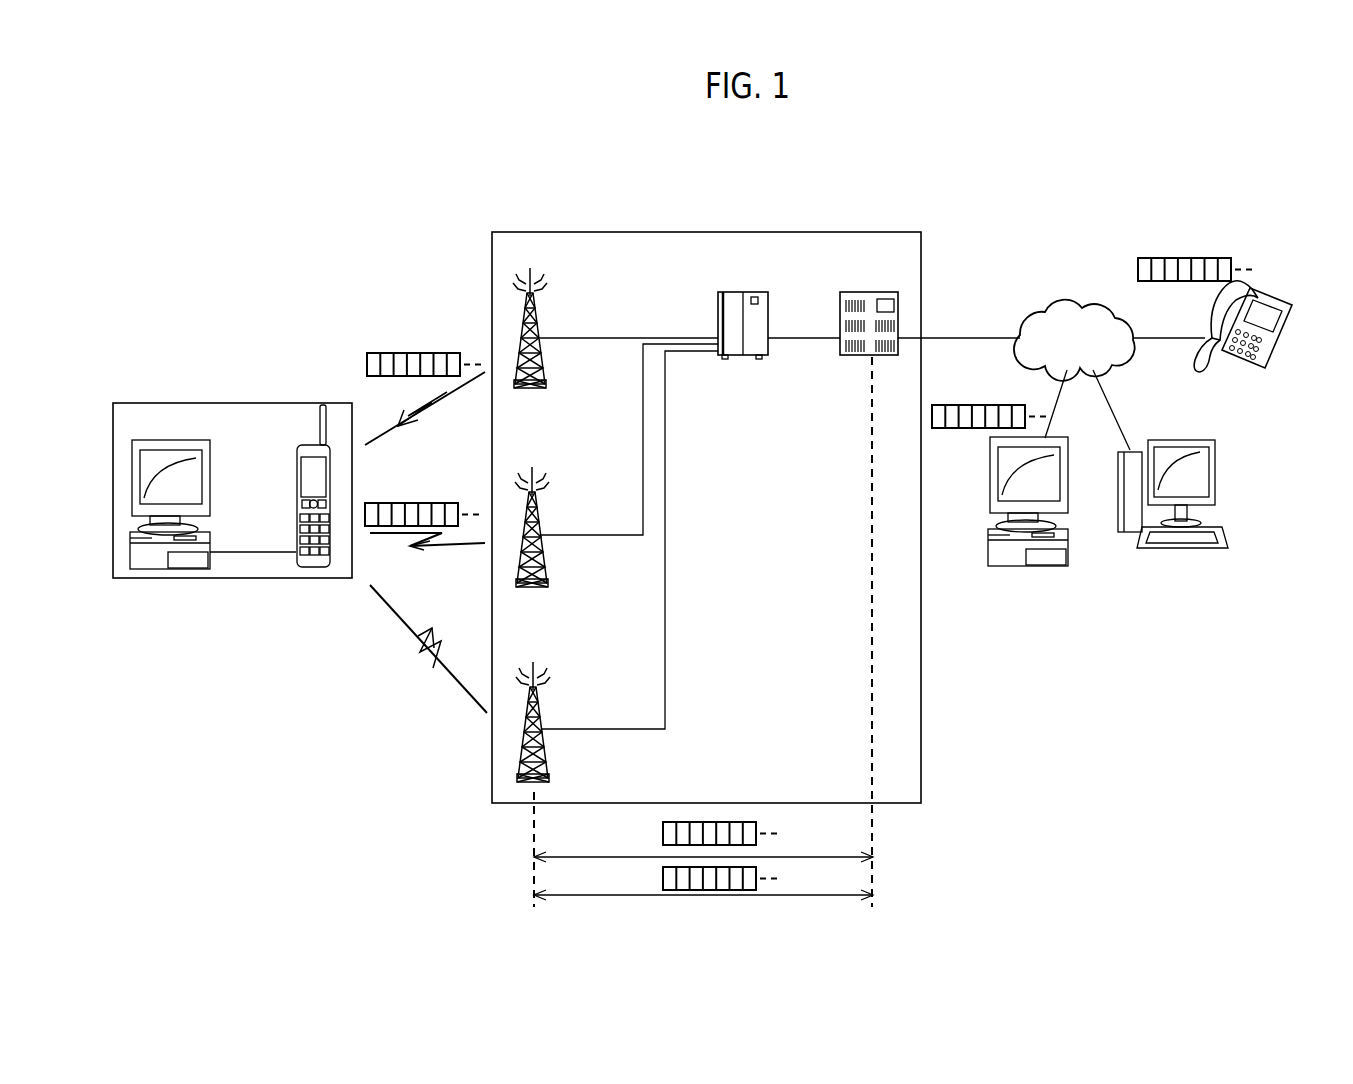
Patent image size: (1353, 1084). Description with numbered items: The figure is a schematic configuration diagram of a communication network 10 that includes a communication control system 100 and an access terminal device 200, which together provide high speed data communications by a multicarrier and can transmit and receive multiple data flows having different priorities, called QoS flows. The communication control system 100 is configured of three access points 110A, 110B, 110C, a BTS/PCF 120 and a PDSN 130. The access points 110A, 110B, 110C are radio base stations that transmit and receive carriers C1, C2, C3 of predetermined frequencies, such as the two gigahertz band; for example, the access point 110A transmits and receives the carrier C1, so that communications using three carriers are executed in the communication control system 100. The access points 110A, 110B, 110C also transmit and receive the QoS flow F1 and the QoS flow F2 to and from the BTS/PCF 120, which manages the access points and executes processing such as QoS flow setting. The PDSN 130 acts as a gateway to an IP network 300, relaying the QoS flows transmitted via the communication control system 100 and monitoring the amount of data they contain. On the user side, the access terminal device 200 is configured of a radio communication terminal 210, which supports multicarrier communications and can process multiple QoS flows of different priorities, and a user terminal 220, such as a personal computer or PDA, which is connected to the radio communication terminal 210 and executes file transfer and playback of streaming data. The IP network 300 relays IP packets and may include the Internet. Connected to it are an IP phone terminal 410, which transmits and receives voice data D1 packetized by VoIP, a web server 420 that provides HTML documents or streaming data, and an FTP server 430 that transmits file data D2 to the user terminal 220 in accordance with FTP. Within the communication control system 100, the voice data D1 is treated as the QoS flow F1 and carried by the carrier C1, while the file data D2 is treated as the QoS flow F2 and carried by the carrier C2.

The communication network 10 is at (1066, 160).
The communication control system 100 is at (706, 500).
The access point 110A is at (615, 328).
The access point 110B is at (616, 465).
The access point 110C is at (617, 566).
The BTS/PCF 120 is at (779, 307).
The PDSN 130 is at (930, 302).
The access terminal device 200 is at (232, 474).
The radio communication terminal 210 is at (296, 470).
The user terminal 220 is at (176, 488).
The IP network 300 is at (1074, 340).
The IP phone terminal 410 is at (1216, 355).
The web server 420 is at (1182, 518).
The FTP server 430 is at (1040, 516).
The QoS flow F1 is at (620, 591).
The QoS flow F2 is at (619, 714).
The carrier C1 is at (425, 416).
The carrier C2 is at (427, 555).
The carrier C3 is at (428, 649).
The voice data D1 is at (1195, 236).
The file data D2 is at (989, 386).